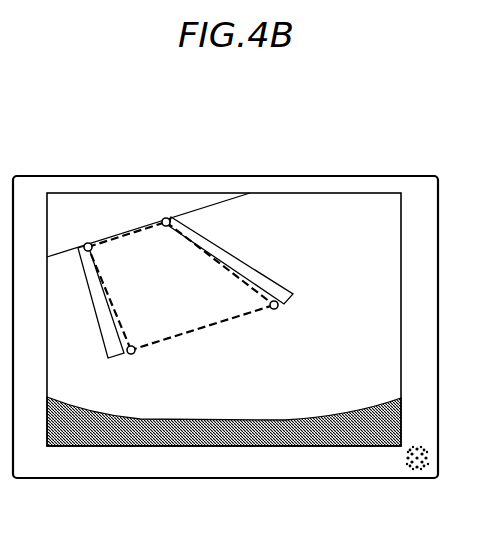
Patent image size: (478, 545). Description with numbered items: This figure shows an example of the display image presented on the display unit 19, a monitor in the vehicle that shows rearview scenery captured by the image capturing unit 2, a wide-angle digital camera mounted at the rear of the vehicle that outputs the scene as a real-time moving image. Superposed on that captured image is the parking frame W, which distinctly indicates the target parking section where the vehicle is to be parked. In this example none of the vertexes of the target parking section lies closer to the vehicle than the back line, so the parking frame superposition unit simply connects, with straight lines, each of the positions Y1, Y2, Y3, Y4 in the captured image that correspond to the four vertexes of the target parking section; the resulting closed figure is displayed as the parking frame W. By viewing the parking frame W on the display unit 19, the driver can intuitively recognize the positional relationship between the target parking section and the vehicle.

The display unit 19 is at (308, 193).
The image capturing unit 2 is at (101, 299).
The parking frame W is at (208, 322).
The position corresponding to vertex W1 Y1 is at (278, 307).
The position corresponding to vertex W2 Y2 is at (170, 220).
The position corresponding to vertex W3 Y3 is at (85, 243).
The position corresponding to vertex W4 Y4 is at (133, 354).